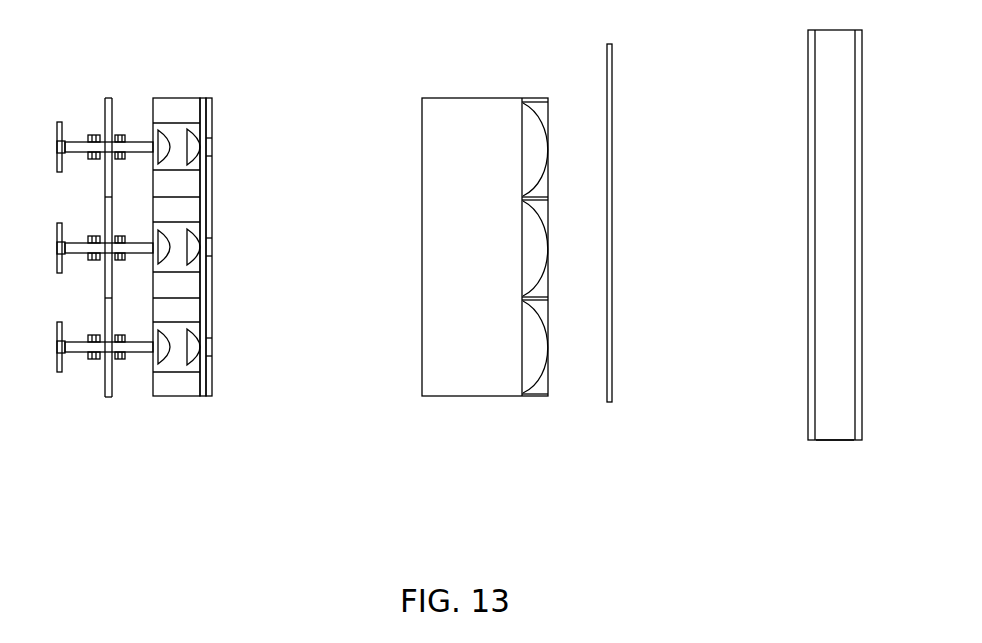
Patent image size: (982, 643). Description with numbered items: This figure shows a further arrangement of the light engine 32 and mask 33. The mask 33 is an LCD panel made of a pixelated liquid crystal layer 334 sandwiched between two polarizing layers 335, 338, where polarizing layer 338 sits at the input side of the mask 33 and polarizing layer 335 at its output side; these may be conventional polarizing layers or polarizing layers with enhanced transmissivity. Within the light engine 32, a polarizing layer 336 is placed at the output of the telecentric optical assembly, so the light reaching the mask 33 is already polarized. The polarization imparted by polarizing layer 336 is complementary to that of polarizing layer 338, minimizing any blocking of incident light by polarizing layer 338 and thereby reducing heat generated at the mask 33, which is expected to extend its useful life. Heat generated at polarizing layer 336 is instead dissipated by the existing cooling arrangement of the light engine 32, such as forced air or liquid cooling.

The light engine 32 is at (643, 420).
The mask 33 is at (863, 455).
The pixelated liquid crystal layer 334 is at (825, 272).
The polarizing layer 335 is at (855, 80).
The polarizing layer 336 is at (607, 76).
The polarizing layer 338 is at (808, 166).